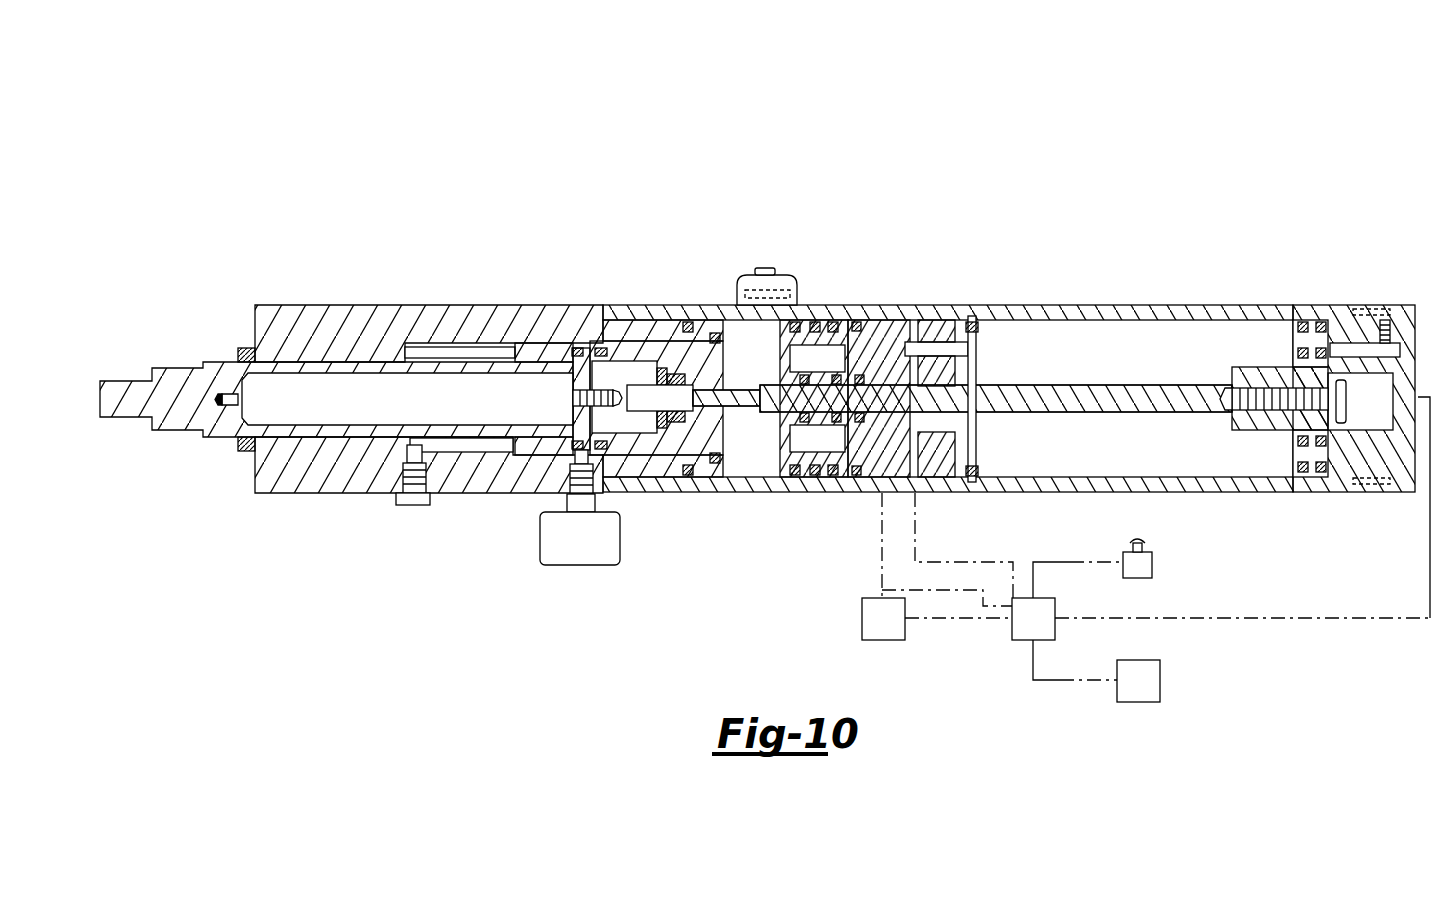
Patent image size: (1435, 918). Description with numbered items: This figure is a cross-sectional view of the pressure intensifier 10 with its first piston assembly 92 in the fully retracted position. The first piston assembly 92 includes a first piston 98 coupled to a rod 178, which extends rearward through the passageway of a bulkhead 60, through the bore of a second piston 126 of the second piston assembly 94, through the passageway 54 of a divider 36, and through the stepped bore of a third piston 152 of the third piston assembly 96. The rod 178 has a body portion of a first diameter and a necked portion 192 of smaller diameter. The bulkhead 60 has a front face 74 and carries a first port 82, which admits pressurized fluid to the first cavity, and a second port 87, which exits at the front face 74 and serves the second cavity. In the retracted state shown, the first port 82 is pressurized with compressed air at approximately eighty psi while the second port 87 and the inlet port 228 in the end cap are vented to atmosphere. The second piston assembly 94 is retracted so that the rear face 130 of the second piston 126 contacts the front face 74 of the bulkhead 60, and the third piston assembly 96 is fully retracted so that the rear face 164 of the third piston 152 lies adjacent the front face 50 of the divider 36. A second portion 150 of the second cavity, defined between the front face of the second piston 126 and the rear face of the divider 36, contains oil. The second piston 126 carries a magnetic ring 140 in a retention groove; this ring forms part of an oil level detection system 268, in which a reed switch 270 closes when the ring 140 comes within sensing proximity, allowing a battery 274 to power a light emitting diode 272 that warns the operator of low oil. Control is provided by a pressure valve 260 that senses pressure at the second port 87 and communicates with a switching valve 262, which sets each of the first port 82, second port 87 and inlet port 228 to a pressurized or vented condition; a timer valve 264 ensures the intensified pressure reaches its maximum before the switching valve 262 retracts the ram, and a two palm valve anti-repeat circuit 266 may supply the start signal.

The pressure intensifier 10 is at (1034, 125).
The divider 36 is at (655, 482).
The front face 50 is at (585, 325).
The passageway 54 is at (703, 305).
The bulkhead 60 is at (905, 305).
The front face 74 is at (847, 494).
The first port 82 is at (915, 494).
The second port 87 is at (882, 495).
The first piston assembly 92 is at (1290, 305).
The second piston assembly 94 is at (803, 487).
The third piston assembly 96 is at (558, 322).
The first piston 98 is at (1267, 434).
The piston 126 is at (782, 455).
The rear face 130 is at (870, 305).
The ring 140 is at (817, 305).
The second portion 150 is at (752, 354).
The third piston 152 is at (522, 325).
The rear face 164 is at (607, 325).
The rod 178 is at (1036, 385).
The necked portion 192 is at (758, 444).
The inlet port 228 is at (1418, 387).
The pressure valve 260 is at (883, 622).
The switching valve 262 is at (1043, 613).
The timer valve 264 is at (1158, 672).
The two palm valve anti-repeat circuit 266 is at (1150, 565).
The oil level detection system 268 is at (790, 255).
The reed switch 270 is at (782, 267).
The light emitting diode 272 is at (765, 267).
The battery 274 is at (790, 277).